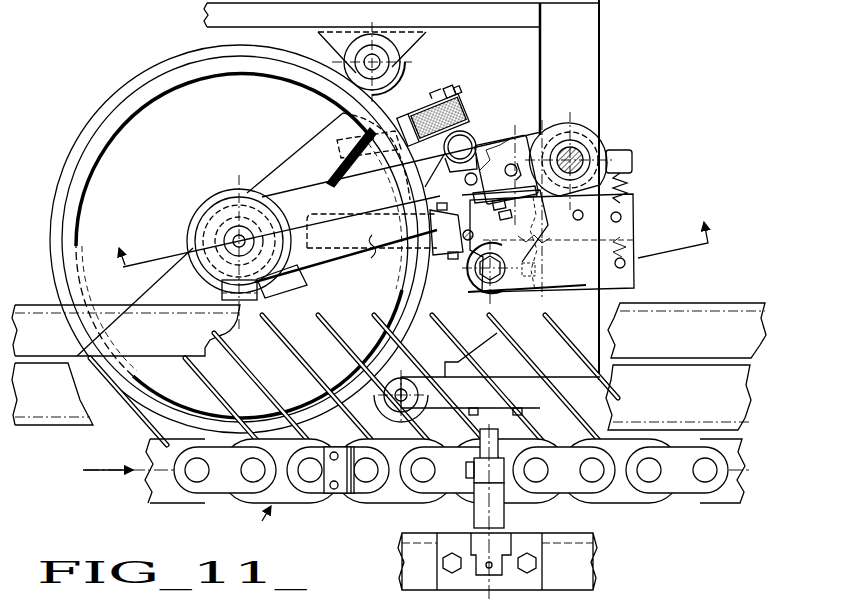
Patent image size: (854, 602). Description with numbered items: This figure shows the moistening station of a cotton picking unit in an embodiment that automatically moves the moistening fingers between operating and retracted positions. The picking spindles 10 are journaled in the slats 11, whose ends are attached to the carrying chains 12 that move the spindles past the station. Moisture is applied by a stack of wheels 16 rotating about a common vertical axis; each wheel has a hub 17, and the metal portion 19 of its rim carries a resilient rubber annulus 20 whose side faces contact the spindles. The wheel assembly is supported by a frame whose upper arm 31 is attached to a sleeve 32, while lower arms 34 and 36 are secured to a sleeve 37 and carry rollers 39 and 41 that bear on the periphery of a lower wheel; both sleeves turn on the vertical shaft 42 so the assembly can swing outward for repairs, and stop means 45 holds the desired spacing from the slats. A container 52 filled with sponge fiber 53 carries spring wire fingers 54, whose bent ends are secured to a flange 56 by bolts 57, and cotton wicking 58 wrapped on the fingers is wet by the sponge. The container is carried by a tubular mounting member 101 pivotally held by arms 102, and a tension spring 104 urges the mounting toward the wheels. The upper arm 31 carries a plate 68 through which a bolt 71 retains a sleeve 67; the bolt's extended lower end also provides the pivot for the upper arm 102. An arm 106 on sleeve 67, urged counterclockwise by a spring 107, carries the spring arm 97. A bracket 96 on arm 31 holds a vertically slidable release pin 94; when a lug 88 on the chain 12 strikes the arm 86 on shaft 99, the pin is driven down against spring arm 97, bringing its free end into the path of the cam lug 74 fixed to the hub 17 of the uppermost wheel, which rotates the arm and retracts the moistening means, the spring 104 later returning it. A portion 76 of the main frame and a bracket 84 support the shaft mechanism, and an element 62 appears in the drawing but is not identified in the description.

The picking spindles 10 is at (256, 379).
The slats 11 is at (567, 444).
The carrying chains 12 is at (398, 364).
The wheels 16 is at (156, 84).
The hub 17 is at (213, 196).
The metal portion of the wheel rim 19 is at (104, 128).
The annulus 20 is at (124, 88).
The upper arm 31 is at (283, 186).
The sleeve 32 is at (626, 158).
The arm 34 is at (207, 15).
The arm 36 is at (496, 380).
The sleeve 37 is at (598, 148).
The roller 39 is at (396, 72).
The roller 41 is at (390, 360).
The vertical shaft 42 is at (569, 138).
The stop means 45 is at (222, 294).
The container 52 is at (452, 95).
The sponge fiber 53 is at (438, 117).
The fingers 54 is at (436, 94).
The flange 56 is at (449, 91).
The bolts 57 is at (458, 90).
The cotton wicking 58 is at (342, 113).
The wedge 62 is at (352, 160).
The sleeve 67 is at (466, 282).
The plate 68 is at (524, 256).
The bolt 71 is at (496, 290).
The cam lug 74 is at (304, 290).
The portion of the main frame 76 is at (700, 306).
The bracket 84 is at (520, 537).
The strike arm 86 is at (471, 477).
The lug 88 is at (337, 496).
The release pin 94 is at (461, 255).
The bracket 96 is at (448, 188).
The spring arm 97 is at (346, 256).
The shaft 99 is at (479, 432).
The tubular mounting member 101 is at (476, 140).
The arms 102 is at (506, 145).
The tension spring 104 is at (548, 240).
The arm 106 is at (626, 279).
The spring 107 is at (630, 185).